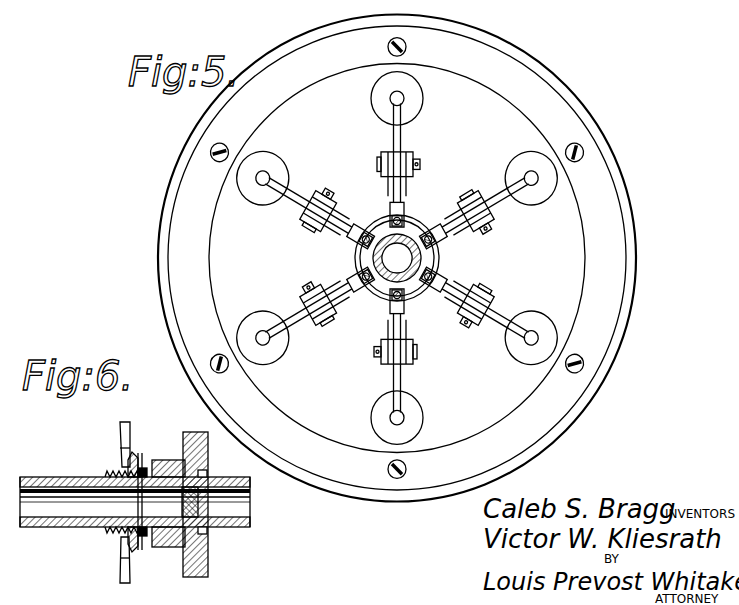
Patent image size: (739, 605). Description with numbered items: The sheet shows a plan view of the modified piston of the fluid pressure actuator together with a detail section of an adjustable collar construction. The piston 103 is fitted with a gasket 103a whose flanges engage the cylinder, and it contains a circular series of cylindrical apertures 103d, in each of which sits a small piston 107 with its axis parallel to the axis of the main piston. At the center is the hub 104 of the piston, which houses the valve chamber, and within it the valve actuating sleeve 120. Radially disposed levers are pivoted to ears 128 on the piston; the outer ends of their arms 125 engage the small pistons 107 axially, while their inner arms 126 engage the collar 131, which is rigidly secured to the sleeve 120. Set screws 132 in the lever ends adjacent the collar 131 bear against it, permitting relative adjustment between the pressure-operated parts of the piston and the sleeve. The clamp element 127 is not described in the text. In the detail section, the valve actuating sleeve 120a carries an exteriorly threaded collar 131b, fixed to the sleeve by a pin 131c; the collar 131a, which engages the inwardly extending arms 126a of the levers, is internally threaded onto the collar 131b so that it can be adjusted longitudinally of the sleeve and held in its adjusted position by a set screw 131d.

In FIG. 5, the piston 103 is at (572, 258).
In FIG. 5, the gasket 103a is at (623, 203).
In FIG. 5, the cylindrical aperture 103d is at (540, 300).
In FIG. 5, the hub 104 is at (441, 258).
In FIG. 5, the piston 107 is at (412, 108).
In FIG. 5, the sleeve 120 is at (382, 278).
In FIG. 6, the valve actuating sleeve 120a is at (50, 477).
In FIG. 5, the arm 125 is at (283, 195).
In FIG. 5, the arm 126 is at (352, 237).
In FIG. 6, the inwardly extending arm 126a is at (123, 438).
In FIG. 5, the clamp 127 is at (415, 350).
In FIG. 5, the ear 128 is at (314, 327).
In FIG. 5, the collar 131 is at (412, 288).
In FIG. 6, the collar 131a is at (135, 460).
In FIG. 6, the exteriorly threaded collar 131b is at (108, 477).
In FIG. 6, the pin 131c is at (147, 472).
In FIG. 6, the set screw 131d is at (138, 540).
In FIG. 5, the set screw 132 is at (356, 240).